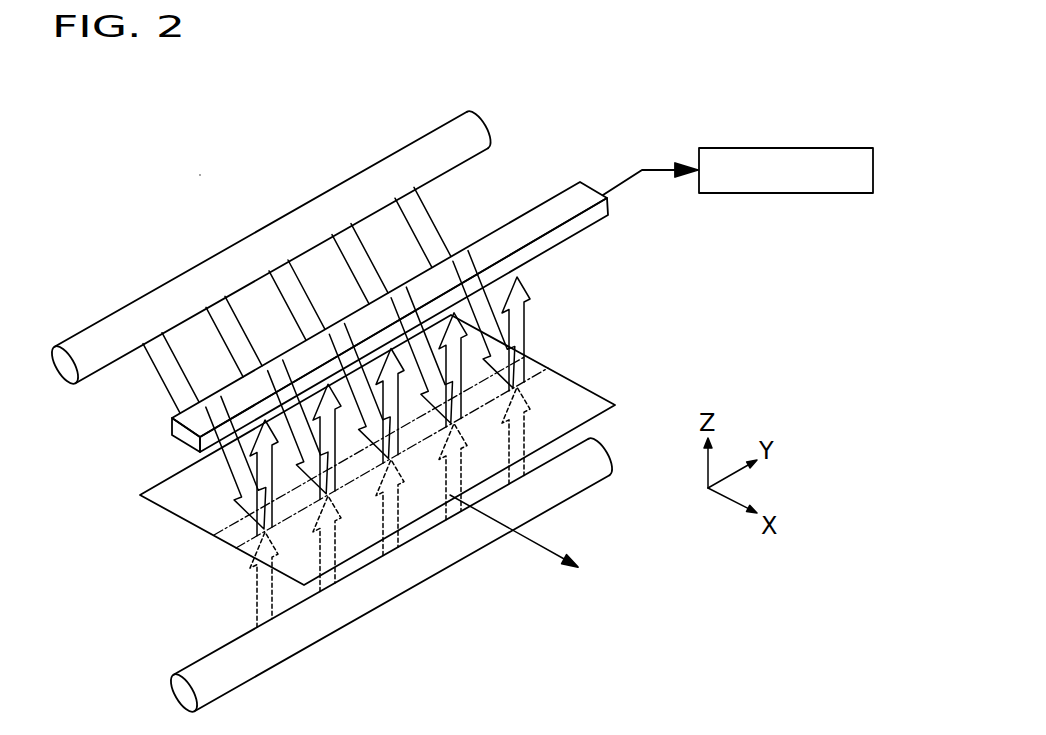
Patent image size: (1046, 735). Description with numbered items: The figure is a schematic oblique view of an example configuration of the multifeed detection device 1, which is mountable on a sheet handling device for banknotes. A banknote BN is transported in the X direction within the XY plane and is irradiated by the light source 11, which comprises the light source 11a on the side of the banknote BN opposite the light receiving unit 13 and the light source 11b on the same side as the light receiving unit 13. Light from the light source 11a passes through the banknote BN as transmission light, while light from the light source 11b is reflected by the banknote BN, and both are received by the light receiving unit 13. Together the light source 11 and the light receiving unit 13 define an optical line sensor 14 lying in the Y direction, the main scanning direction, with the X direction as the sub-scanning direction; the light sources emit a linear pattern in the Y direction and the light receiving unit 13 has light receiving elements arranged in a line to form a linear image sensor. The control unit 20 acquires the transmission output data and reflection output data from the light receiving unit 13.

The multifeed detection device 1 is at (195, 168).
The light source 11 is at (329, 398).
The light source 11a is at (425, 150).
The light source 11b is at (427, 567).
The light receiving unit 13 is at (557, 207).
The optical line sensor 14 is at (575, 145).
The control unit 20 is at (805, 148).
The banknote BN is at (560, 387).